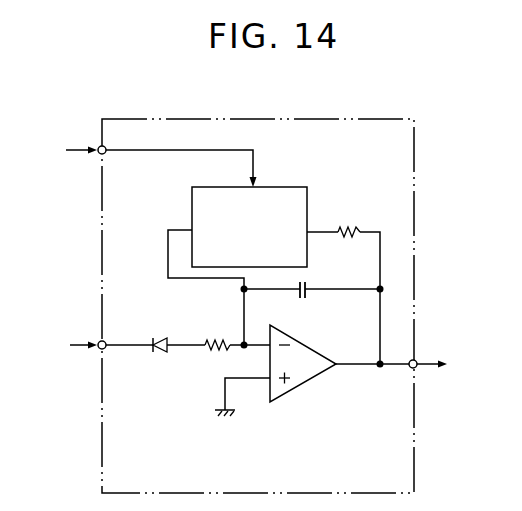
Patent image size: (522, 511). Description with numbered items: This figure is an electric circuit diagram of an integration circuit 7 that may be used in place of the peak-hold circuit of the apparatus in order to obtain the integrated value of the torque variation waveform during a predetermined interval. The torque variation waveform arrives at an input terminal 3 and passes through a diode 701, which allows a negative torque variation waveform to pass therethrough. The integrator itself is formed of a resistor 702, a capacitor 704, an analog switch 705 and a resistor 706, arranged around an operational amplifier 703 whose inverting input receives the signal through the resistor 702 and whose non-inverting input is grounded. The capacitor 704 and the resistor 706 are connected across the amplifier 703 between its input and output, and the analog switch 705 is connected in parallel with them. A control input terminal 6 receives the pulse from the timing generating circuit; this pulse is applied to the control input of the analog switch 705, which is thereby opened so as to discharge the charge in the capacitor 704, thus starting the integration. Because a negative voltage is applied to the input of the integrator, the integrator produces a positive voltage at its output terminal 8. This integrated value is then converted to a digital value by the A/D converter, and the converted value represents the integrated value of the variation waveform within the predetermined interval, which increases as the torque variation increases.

The integration circuit 7 is at (330, 117).
The timing generating circuit 6 is at (74, 154).
The signal input terminal 3 is at (76, 345).
The A/D converter 8 is at (438, 364).
The diode 701 is at (160, 352).
The resistor 702 is at (214, 352).
The operational amplifier 703 is at (313, 385).
The capacitor 704 is at (302, 299).
The analog switch 705 is at (282, 186).
The resistor 706 is at (341, 230).